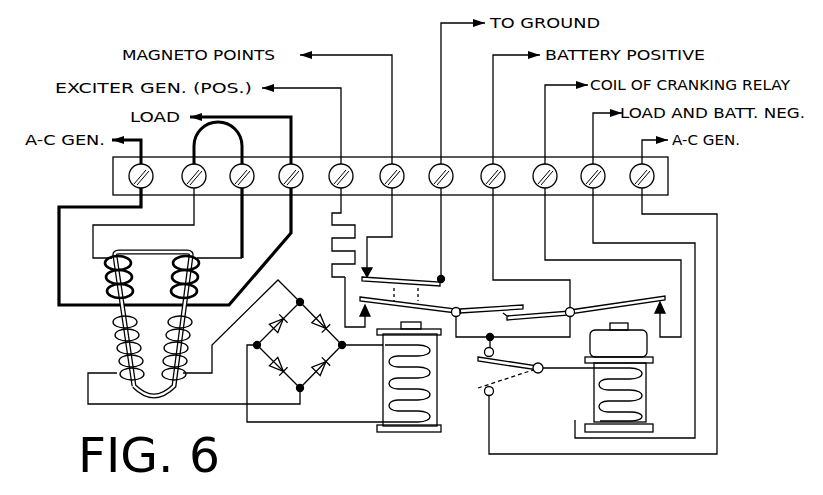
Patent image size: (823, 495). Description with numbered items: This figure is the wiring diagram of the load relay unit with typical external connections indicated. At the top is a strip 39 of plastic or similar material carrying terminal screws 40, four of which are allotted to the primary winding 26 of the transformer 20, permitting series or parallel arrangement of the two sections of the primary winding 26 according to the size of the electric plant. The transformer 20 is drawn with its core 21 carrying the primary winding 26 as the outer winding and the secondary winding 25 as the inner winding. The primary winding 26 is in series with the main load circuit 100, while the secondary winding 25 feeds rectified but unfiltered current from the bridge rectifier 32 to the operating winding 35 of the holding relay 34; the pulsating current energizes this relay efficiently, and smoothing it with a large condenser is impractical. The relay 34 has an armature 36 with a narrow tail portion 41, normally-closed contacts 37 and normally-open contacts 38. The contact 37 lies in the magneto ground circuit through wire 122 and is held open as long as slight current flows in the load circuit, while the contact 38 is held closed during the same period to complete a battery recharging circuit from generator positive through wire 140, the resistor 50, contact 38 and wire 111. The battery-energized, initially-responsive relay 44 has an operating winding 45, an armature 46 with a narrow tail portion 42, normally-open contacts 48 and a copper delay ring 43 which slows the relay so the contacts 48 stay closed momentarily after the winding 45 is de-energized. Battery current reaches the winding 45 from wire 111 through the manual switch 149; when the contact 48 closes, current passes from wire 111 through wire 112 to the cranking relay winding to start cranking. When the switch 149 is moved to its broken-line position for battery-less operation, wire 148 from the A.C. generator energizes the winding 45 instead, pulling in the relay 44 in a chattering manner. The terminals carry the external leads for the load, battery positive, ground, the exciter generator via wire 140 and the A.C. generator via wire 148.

The transformer 20 is at (133, 324).
The magnetic core 21 is at (153, 253).
The secondary winding 25 is at (187, 329).
The primary winding 26 is at (199, 272).
The rectifier 32 is at (328, 356).
The relay 34 is at (429, 377).
The operating coil or winding 35 is at (421, 355).
The armature 36 is at (430, 302).
The normally-closed contacts 37 is at (370, 270).
The normally-open contacts 38 is at (368, 311).
The strip 39 is at (668, 172).
The terminal screws 40 is at (184, 189).
The tail portion 41 is at (500, 306).
The tail portion 42 is at (527, 315).
The copper delay ring 43 is at (640, 346).
The relay 44 is at (603, 377).
The operating winding 45 is at (640, 381).
The armature 46 is at (634, 299).
The normally-open contacts 48 is at (656, 312).
The resistor 50 is at (332, 240).
The main load circuit 100 is at (291, 135).
The wire 111 is at (493, 112).
The wire 112 is at (545, 112).
The wire 122 is at (392, 110).
The wire 140 is at (341, 111).
The wire 148 is at (642, 140).
The manual switch 149 is at (510, 360).